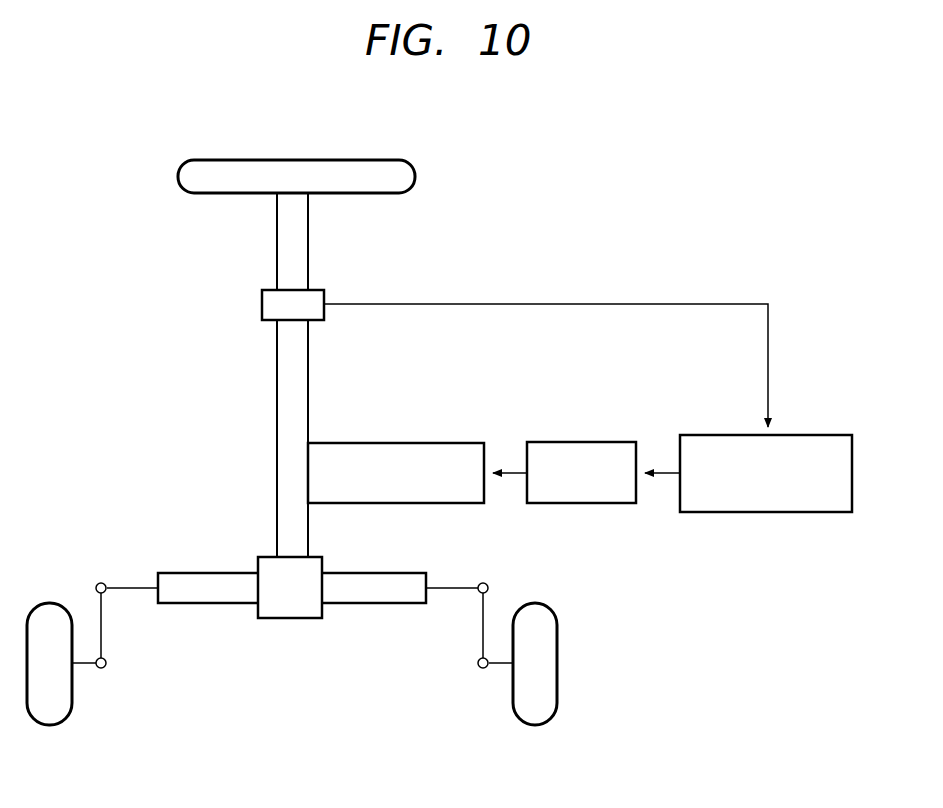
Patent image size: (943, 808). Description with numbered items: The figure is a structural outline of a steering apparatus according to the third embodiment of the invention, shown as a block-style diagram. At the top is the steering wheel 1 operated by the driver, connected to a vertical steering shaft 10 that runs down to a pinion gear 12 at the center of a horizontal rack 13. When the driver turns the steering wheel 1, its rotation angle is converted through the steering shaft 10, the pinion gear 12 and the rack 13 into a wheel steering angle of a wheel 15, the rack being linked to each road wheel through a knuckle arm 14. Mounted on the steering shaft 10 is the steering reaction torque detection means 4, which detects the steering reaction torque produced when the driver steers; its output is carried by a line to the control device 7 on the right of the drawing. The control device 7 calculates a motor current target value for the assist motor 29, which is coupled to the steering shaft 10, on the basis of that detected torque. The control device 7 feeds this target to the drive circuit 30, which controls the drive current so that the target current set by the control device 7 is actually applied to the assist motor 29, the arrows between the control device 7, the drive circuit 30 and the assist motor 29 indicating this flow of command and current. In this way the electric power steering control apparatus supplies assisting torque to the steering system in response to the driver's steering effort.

The steering wheel 1 is at (360, 160).
The steering reaction torque detection means 4 is at (272, 300).
The steering shaft 10 is at (281, 361).
The assist motor 29 is at (445, 443).
The drive circuit 30 is at (598, 442).
The control device 7 is at (815, 435).
The pinion gear 12 is at (278, 618).
The rack 13 is at (184, 603).
The knuckle arm 14 is at (482, 625).
The wheel 15 is at (50, 603).